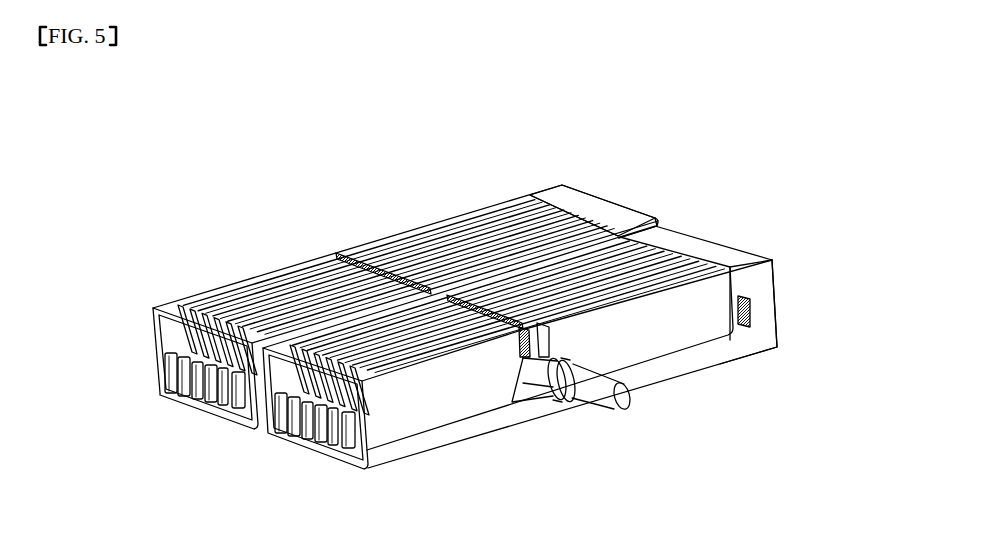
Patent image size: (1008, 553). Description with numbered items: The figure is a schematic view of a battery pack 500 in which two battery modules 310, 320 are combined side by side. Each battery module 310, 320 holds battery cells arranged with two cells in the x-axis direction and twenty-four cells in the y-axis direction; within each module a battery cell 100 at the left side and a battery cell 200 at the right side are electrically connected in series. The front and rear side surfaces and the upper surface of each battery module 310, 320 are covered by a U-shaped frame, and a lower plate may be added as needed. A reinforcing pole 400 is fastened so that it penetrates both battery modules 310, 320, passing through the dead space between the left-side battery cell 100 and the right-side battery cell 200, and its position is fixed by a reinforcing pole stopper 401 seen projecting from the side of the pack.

The battery pack 500 is at (163, 136).
The battery cell 100 is at (445, 408).
The battery cell 200 is at (688, 332).
The battery module 310 is at (778, 300).
The battery module 320 is at (610, 198).
The reinforcing pole 400 is at (630, 390).
The reinforcing pole stopper 401 is at (552, 398).